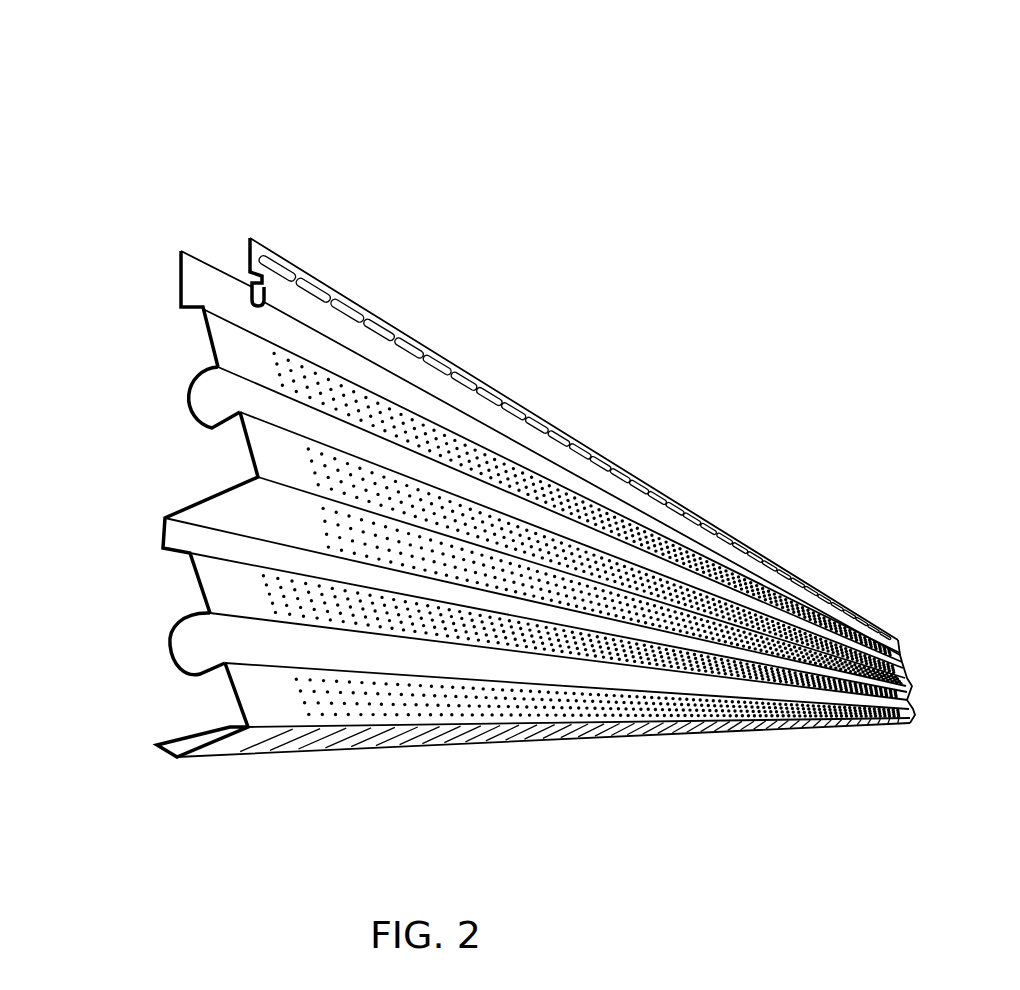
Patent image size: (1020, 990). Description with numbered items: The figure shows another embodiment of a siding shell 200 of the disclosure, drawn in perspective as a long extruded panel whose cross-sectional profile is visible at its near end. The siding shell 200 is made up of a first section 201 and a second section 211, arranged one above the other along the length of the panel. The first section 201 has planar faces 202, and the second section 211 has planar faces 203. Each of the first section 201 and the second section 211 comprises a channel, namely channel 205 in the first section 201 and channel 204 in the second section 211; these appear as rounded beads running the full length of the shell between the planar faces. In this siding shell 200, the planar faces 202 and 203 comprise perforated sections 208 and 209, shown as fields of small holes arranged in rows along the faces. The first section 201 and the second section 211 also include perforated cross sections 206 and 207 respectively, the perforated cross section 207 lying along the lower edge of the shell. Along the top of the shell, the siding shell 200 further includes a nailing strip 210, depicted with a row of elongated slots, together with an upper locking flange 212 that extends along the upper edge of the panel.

The siding shell 200 is at (176, 66).
The first section 201 is at (198, 278).
The planar faces 202 is at (267, 446).
The planar faces 203 is at (213, 575).
The channel 204 is at (193, 648).
The channel 205 is at (203, 411).
The perforated cross section 206 is at (625, 612).
The perforated cross section 207 is at (587, 737).
The perforated section 208 is at (541, 540).
The perforated section 209 is at (410, 707).
The nailing strip 210 is at (452, 365).
The second section 211 is at (157, 750).
The upper locking flange 212 is at (290, 297).